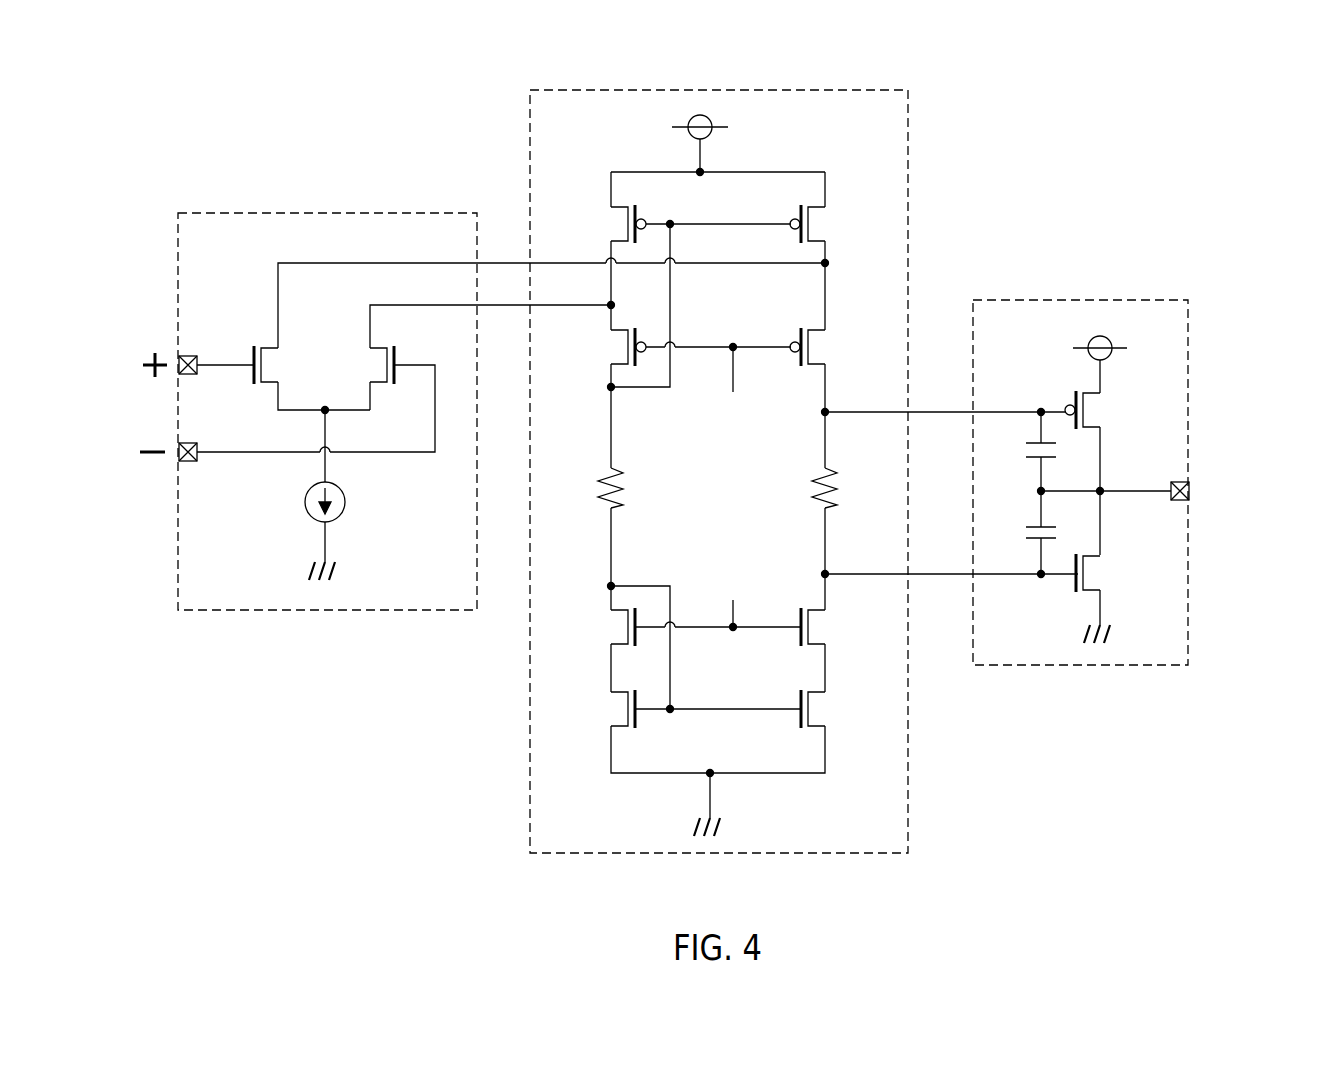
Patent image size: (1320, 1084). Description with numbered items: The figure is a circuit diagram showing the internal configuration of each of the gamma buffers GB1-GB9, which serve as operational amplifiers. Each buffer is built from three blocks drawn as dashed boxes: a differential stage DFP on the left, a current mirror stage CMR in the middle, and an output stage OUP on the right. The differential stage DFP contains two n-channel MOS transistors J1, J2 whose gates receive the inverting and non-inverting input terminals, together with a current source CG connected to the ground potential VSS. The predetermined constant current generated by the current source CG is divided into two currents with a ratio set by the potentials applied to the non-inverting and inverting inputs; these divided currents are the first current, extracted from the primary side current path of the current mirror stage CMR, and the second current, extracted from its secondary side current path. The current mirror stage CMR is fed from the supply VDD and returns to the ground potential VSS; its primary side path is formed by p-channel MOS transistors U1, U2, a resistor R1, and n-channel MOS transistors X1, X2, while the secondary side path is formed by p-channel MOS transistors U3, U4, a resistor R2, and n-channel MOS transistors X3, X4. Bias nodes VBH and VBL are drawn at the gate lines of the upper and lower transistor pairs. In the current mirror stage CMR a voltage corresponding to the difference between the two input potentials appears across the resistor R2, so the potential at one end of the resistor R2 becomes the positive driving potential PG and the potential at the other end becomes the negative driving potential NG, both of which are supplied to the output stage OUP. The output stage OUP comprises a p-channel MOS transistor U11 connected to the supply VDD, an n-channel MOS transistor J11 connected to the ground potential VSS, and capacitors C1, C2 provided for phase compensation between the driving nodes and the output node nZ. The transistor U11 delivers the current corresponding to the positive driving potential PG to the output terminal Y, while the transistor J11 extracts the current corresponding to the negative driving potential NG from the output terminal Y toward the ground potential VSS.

The gamma buffers GB1-GB9 is at (1105, 107).
The differential stage DFP is at (403, 213).
The current mirror stage CMR is at (812, 90).
The output stage OUP is at (1100, 300).
The n-channel MOS transistor J1 is at (392, 368).
The n-channel MOS transistor J2 is at (262, 365).
The current source CG is at (345, 500).
The p-channel MOS transistor U1 is at (618, 229).
The p-channel MOS transistor U2 is at (618, 353).
The p-channel MOS transistor U3 is at (818, 229).
The p-channel MOS transistor U4 is at (818, 352).
The n-channel MOS transistor X1 is at (618, 633).
The n-channel MOS transistor X2 is at (618, 715).
The n-channel MOS transistor X3 is at (812, 631).
The n-channel MOS transistor X4 is at (812, 713).
The resistor R1 is at (624, 490).
The resistor R2 is at (811, 485).
The high bias voltage node VBH is at (722, 384).
The low bias voltage node VBL is at (725, 603).
The positive driving potential PG is at (944, 399).
The negative driving potential NG is at (950, 562).
The p-channel MOS transistor U11 is at (1090, 416).
The n-channel MOS transistor J11 is at (1090, 578).
The capacitor C1 is at (1033, 442).
The capacitor C2 is at (1033, 527).
The output node nZ is at (1124, 491).
The output terminal Y is at (1197, 491).
The power supply VDD is at (713, 138).
The ground potential VSS is at (732, 808).